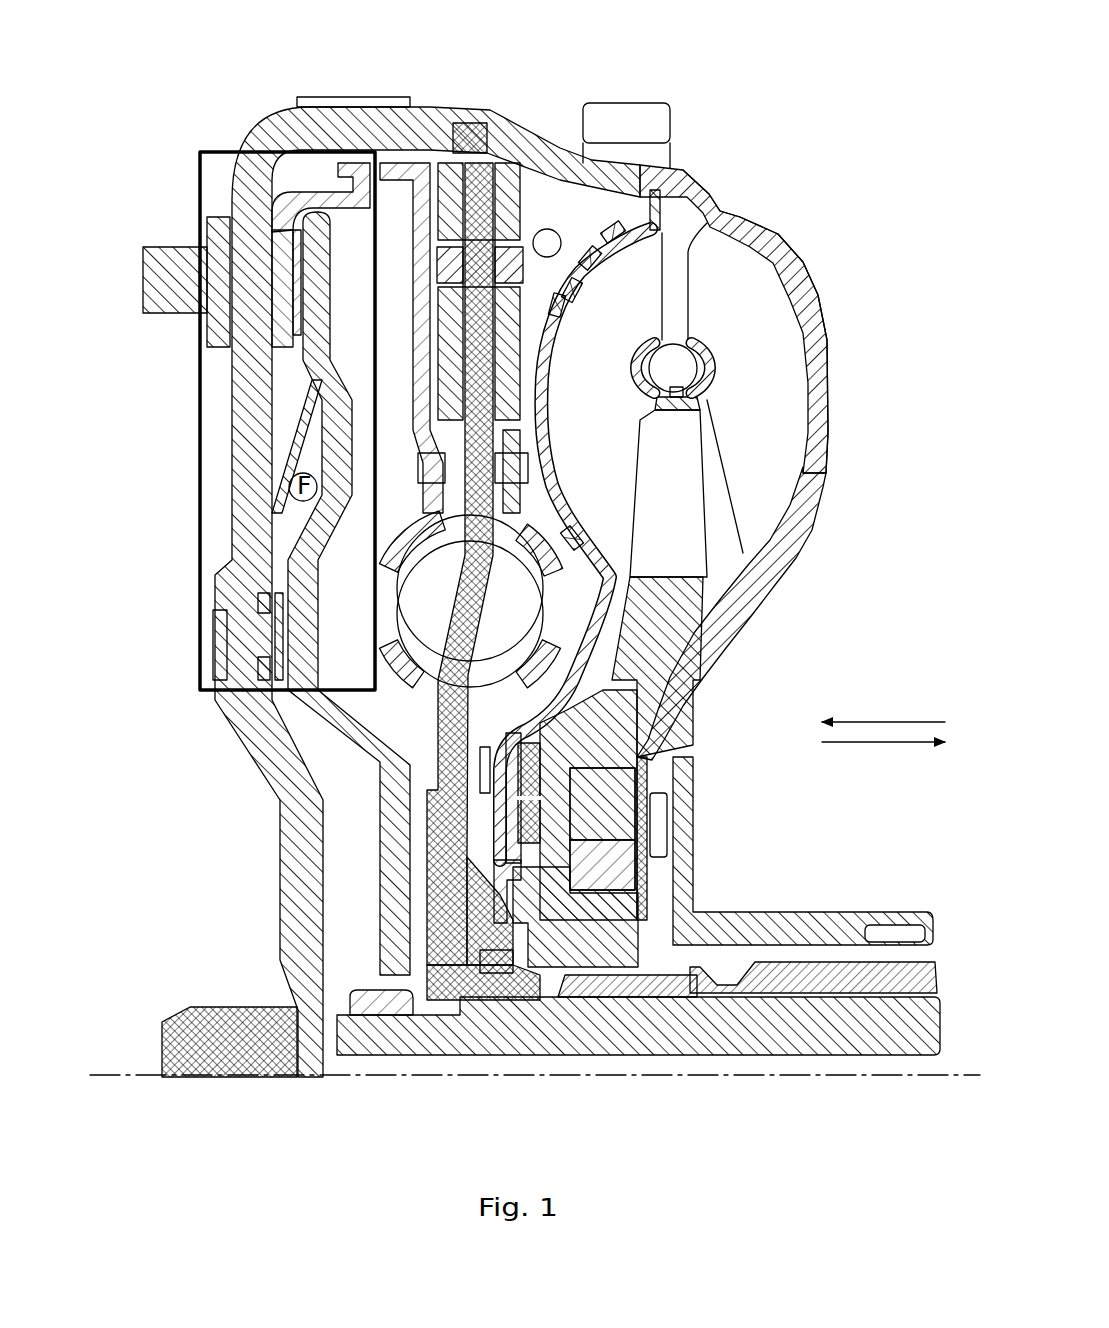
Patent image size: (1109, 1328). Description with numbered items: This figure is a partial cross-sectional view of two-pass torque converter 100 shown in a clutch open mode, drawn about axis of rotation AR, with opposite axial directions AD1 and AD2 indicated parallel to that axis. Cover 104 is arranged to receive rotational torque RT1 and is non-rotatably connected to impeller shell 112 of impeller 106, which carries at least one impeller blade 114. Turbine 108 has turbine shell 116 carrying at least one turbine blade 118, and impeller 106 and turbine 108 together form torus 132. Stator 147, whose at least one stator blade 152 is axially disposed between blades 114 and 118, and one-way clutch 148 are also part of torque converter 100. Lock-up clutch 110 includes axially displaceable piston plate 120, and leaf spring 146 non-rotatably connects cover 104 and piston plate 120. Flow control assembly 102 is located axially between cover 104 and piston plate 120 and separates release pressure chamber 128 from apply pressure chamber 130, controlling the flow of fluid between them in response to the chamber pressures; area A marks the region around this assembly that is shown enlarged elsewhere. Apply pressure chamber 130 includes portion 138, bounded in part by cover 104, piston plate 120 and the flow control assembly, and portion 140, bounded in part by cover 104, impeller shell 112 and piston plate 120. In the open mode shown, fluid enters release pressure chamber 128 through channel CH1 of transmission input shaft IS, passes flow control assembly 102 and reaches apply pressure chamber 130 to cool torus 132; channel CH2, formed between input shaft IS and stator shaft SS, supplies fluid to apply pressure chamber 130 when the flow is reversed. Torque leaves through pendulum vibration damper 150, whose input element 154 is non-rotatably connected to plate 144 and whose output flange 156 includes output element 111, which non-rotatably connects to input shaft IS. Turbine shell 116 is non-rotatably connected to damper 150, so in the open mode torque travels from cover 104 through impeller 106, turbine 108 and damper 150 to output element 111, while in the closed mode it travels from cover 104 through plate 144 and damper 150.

The two-pass torque converter 100 is at (835, 72).
The flow control assembly 102 is at (290, 447).
The cover 104 is at (280, 850).
The impeller 106 is at (805, 268).
The turbine 108 is at (620, 213).
The lock-up clutch 110 is at (427, 163).
The output element 111 is at (500, 990).
The impeller shell 112 is at (815, 318).
The impeller blade 114 is at (689, 400).
The turbine shell 116 is at (650, 220).
The turbine blade 118 is at (636, 286).
The piston plate 120 is at (283, 792).
The release pressure chamber 128 is at (277, 563).
The apply pressure chamber 130 is at (555, 180).
The torus 132 is at (683, 368).
The portion of apply pressure chamber 138 is at (285, 380).
The portion of apply pressure chamber 140 is at (560, 207).
The plate 144 is at (300, 188).
The leaf spring 146 is at (258, 667).
The stator 147 is at (695, 618).
The one-way clutch 148 is at (670, 752).
The pendulum vibration damper 150 is at (478, 160).
The stator blade 152 is at (680, 492).
The input element 154 is at (330, 237).
The output flange 156 is at (480, 923).
The area A is at (330, 680).
The axial direction AD1 is at (862, 720).
The axial direction AD2 is at (880, 747).
The stator shaft SS is at (810, 975).
The channel CH1 is at (351, 1065).
The channel CH2 is at (885, 985).
The transmission input shaft IS is at (922, 1025).
The rotational torque RT1 is at (120, 1100).
The axis of rotation AR is at (660, 1077).